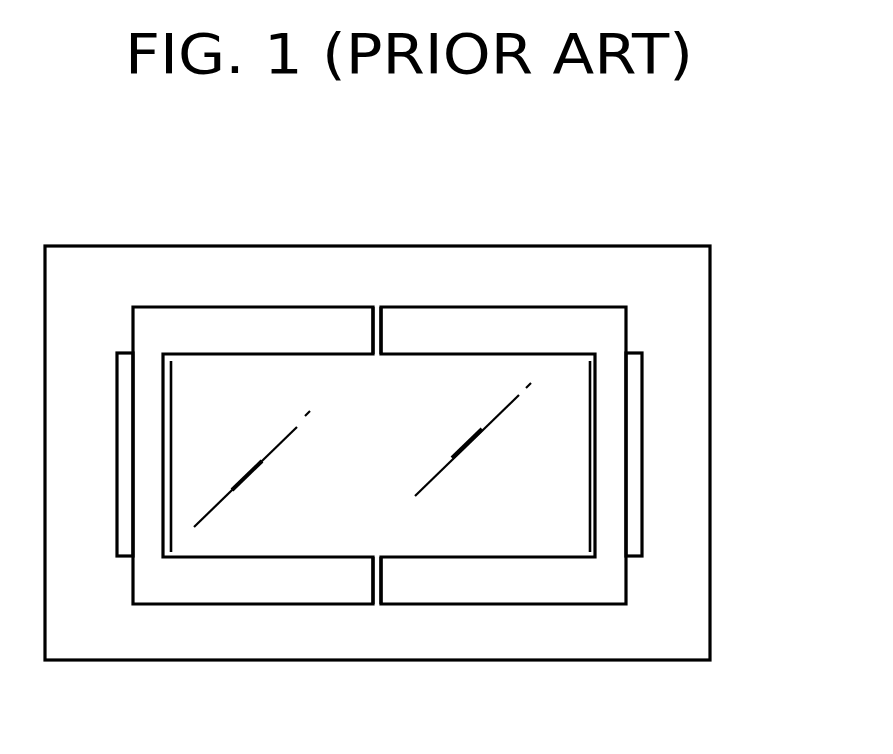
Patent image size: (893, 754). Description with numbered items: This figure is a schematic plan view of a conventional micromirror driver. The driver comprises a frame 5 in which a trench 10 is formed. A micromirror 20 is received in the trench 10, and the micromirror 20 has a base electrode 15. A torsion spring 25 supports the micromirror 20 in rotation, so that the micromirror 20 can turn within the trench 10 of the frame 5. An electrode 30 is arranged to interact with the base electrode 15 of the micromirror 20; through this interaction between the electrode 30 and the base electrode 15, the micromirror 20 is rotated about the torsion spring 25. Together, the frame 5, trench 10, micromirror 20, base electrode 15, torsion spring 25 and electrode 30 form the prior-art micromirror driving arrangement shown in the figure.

The frame 5 is at (688, 248).
The trench 10 is at (152, 327).
The base electrode 15 is at (592, 362).
The micromirror 20 is at (212, 367).
The torsion spring 25 is at (375, 328).
The electrode 30 is at (636, 413).